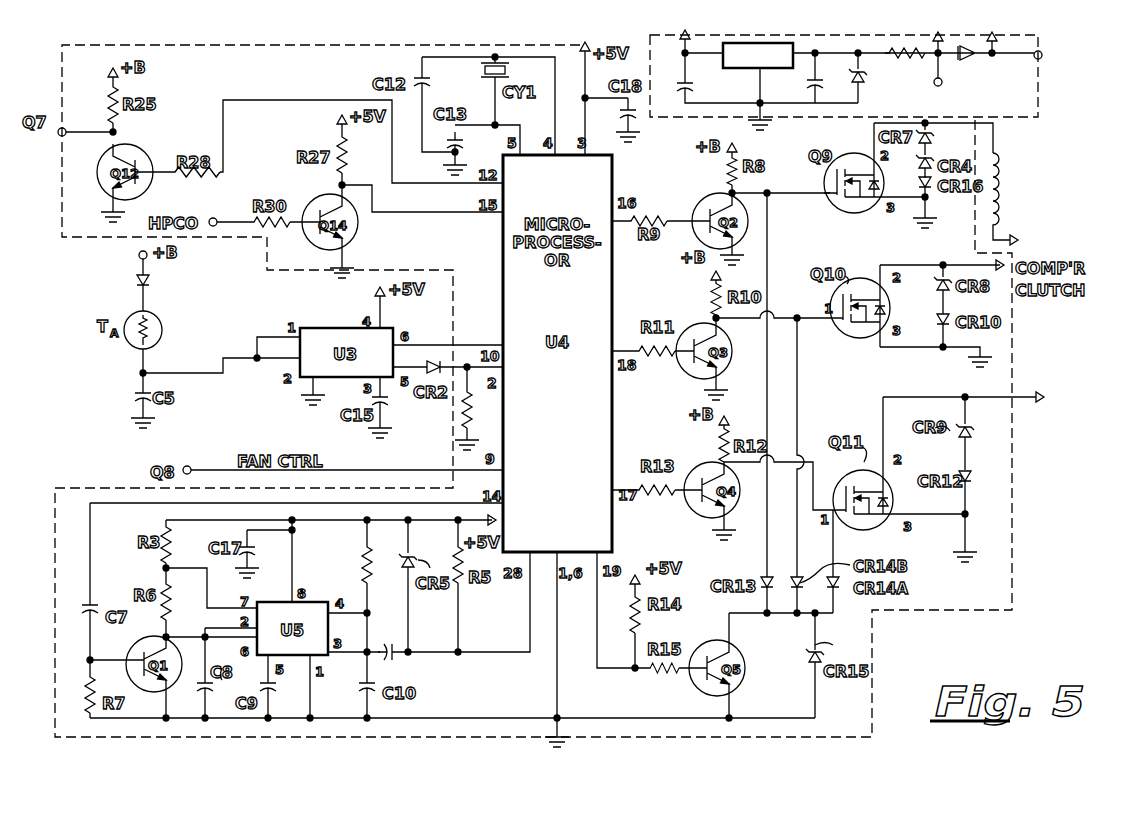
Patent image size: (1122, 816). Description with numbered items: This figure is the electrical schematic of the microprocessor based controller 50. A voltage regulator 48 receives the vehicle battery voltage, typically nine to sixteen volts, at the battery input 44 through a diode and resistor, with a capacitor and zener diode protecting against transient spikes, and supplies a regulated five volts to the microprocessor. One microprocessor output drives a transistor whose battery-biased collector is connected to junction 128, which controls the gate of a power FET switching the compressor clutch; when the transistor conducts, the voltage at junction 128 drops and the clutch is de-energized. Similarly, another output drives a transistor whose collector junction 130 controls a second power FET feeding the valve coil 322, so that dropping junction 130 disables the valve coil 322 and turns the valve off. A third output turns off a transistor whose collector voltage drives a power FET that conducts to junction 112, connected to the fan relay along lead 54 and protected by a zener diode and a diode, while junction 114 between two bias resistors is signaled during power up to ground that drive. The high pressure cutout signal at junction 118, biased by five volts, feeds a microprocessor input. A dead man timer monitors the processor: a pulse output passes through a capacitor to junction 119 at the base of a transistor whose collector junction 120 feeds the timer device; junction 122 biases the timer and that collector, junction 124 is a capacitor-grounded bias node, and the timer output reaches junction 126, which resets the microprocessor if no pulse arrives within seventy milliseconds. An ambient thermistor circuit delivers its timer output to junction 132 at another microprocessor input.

The power input connector (9-16V) 44 is at (1042, 58).
The voltage regulator 48 is at (1022, 117).
The controller 50 is at (872, 640).
The lead 54 is at (1022, 397).
The junction 112 is at (965, 397).
The junction 114 is at (635, 668).
The junction 118 is at (342, 185).
The junction 119 is at (90, 660).
The junction 120 is at (205, 637).
The junction 122 is at (166, 568).
The junction 124 is at (367, 613).
The junction 126 is at (408, 652).
The junction 128 is at (797, 318).
The junction 130 is at (767, 193).
The junction 132 is at (467, 367).
The valve coil 322 is at (1010, 203).